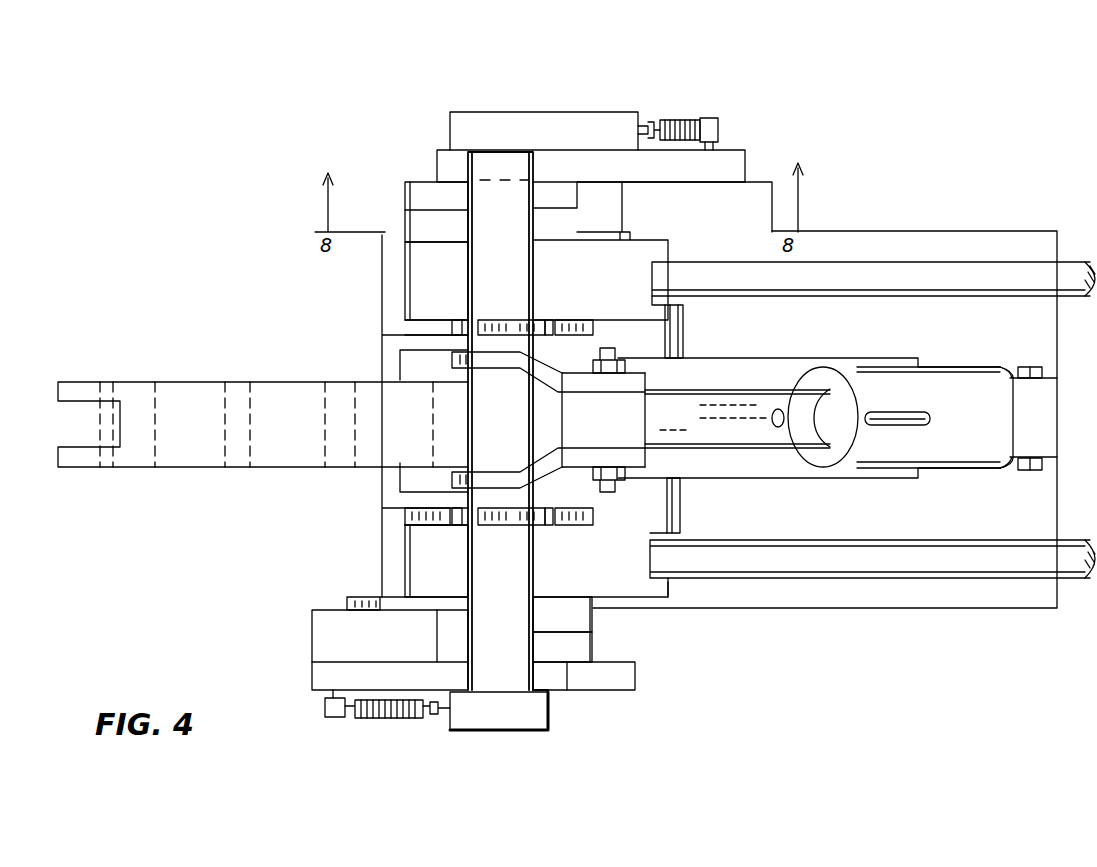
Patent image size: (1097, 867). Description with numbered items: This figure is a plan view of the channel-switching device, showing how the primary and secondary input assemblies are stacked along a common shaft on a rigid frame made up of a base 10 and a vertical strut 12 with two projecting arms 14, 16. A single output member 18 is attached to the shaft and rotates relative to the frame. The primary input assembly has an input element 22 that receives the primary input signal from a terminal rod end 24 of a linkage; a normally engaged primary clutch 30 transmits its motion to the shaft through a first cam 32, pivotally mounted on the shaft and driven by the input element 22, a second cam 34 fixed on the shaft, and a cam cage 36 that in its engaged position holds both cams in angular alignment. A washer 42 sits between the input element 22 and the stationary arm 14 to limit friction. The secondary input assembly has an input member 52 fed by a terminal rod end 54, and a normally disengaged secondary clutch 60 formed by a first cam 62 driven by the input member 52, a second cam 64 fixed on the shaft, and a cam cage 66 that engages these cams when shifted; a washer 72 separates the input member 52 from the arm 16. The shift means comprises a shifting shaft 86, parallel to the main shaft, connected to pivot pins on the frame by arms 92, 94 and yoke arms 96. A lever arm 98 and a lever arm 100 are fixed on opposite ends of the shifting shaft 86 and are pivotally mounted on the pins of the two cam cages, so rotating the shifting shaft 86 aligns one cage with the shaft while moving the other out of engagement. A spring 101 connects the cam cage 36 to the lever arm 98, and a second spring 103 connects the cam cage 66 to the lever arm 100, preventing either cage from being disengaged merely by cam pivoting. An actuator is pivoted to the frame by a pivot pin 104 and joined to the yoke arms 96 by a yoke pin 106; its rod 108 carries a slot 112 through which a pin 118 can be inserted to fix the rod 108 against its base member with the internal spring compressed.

The base 10 is at (926, 517).
The vertical strut 12 is at (388, 365).
The projecting arm 14 is at (402, 340).
The projecting arm 16 is at (395, 497).
The output member 18 is at (165, 467).
The input element 22 is at (405, 258).
The terminal rod end 24 is at (974, 264).
The primary clutch 30 is at (779, 136).
The first cam 32 is at (405, 215).
The second cam 34 is at (437, 166).
The cam cage 36 is at (742, 133).
The washer 42 is at (593, 328).
The input member 52 is at (420, 550).
The terminal rod end 54 is at (955, 566).
The secondary clutch 60 is at (725, 661).
The first cam 62 is at (595, 618).
The second cam 64 is at (595, 640).
The cam cage 66 is at (655, 691).
The washer 72 is at (612, 521).
The shifting shaft 86 is at (540, 695).
The arm 92 is at (542, 322).
The arm 94 is at (546, 525).
The yoke arms 96 is at (530, 355).
The lever arm 98 is at (597, 128).
The lever arm 100 is at (490, 722).
The spring 101 is at (672, 120).
The second spring 103 is at (385, 720).
The pivot pin 104 is at (1026, 472).
The yoke pin 106 is at (668, 356).
The rod 108 is at (752, 405).
The slot 112 is at (778, 427).
The pin 118 is at (930, 420).